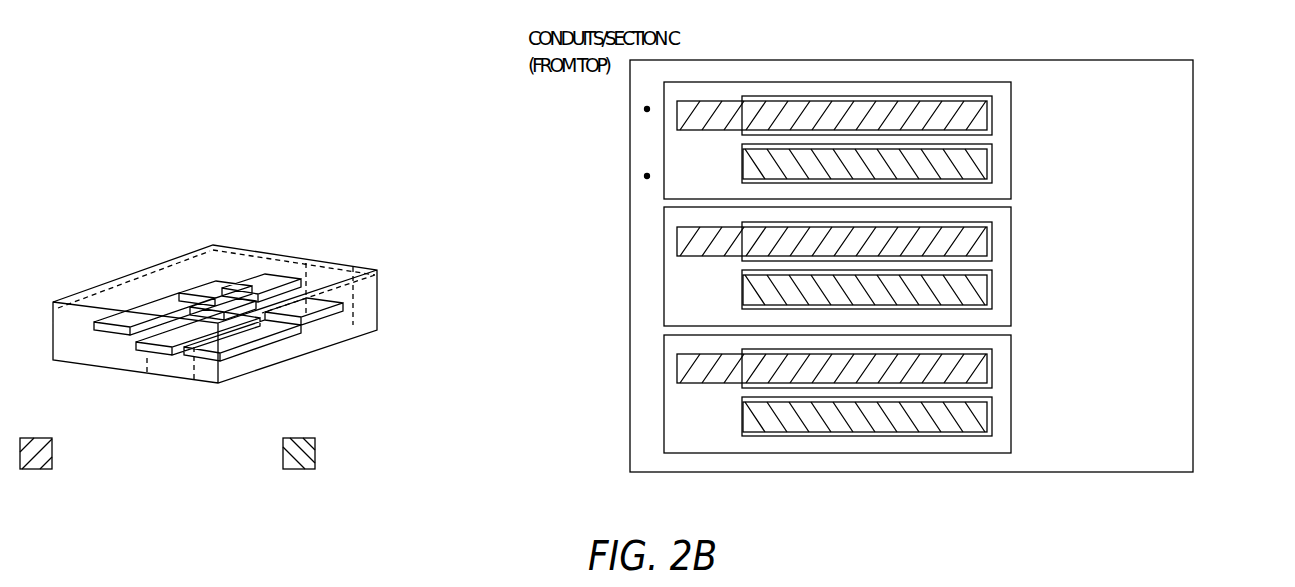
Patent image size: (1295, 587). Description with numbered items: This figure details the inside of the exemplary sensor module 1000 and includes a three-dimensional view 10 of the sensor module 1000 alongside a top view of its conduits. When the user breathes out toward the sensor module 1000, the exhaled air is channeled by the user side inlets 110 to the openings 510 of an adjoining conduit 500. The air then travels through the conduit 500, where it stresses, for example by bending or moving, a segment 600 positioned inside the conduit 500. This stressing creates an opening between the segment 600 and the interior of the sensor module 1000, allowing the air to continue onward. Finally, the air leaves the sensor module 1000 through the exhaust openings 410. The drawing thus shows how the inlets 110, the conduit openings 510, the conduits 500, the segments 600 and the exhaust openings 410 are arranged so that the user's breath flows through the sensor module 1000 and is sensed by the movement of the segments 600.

The three-dimensional view 10 is at (366, 188).
The user side inlets 110 is at (647, 176).
The exhaust openings 410 is at (1193, 148).
The conduit 500 is at (1011, 392).
The openings 510 is at (842, 430).
The segment 600 is at (742, 292).
The sensor module 1000 is at (1193, 265).